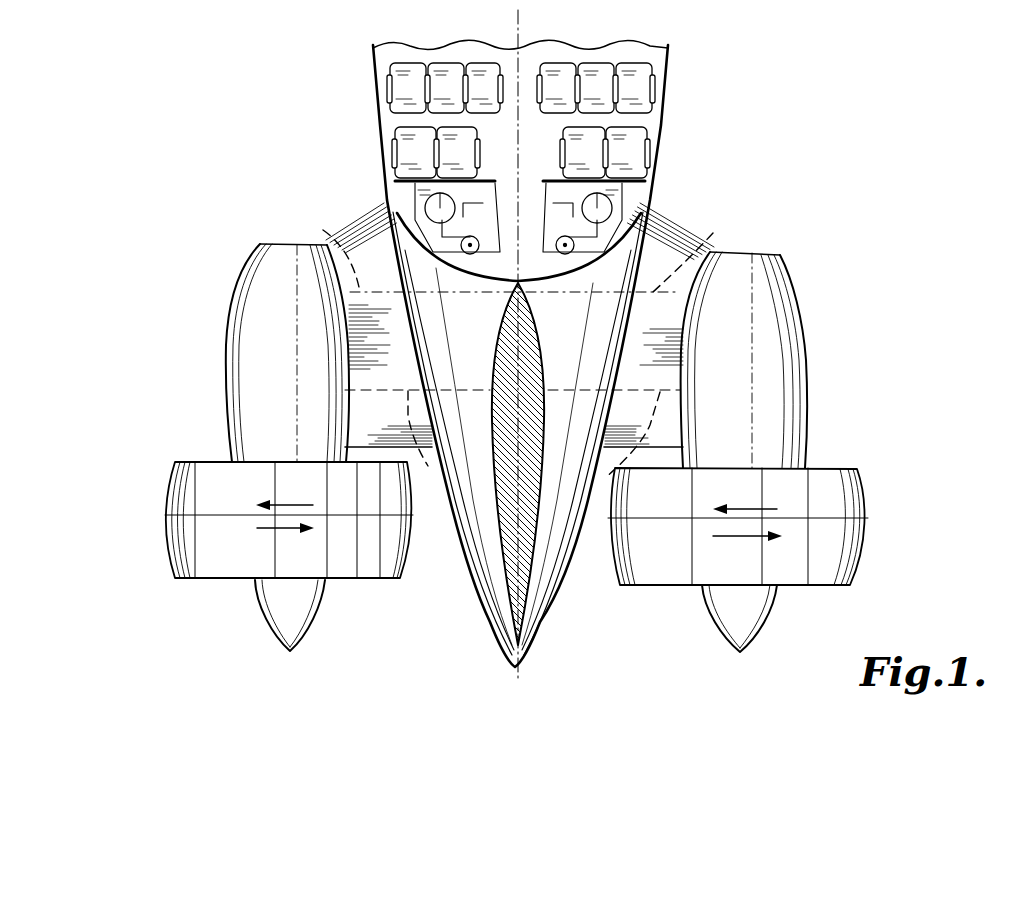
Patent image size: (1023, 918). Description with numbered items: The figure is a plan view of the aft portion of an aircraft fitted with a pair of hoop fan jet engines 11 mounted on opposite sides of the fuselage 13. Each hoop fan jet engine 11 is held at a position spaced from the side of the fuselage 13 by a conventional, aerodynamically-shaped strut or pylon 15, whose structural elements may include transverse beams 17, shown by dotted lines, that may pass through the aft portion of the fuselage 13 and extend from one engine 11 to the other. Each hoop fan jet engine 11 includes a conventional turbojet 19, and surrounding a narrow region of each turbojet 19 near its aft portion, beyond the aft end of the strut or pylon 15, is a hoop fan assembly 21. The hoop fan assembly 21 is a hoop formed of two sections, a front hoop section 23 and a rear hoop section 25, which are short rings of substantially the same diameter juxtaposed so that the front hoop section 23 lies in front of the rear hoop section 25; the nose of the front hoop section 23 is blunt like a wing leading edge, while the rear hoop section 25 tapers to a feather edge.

The hoop fan jet engine 11 is at (526, 448).
The fuselage 13 is at (661, 167).
The strut or pylon 15 is at (357, 238).
The transverse beam 17 is at (582, 485).
The turbojet 19 is at (253, 289).
The hoop fan assembly 21 is at (520, 512).
The front hoop section 23 is at (173, 490).
The rear hoop section 25 is at (173, 557).